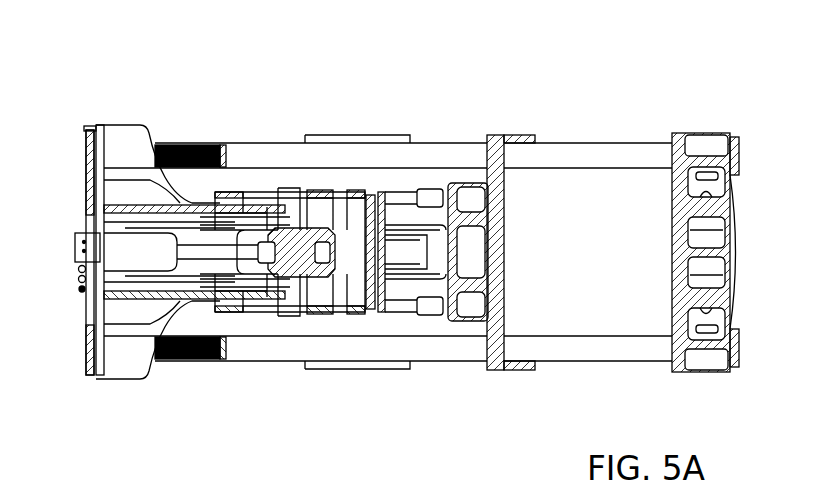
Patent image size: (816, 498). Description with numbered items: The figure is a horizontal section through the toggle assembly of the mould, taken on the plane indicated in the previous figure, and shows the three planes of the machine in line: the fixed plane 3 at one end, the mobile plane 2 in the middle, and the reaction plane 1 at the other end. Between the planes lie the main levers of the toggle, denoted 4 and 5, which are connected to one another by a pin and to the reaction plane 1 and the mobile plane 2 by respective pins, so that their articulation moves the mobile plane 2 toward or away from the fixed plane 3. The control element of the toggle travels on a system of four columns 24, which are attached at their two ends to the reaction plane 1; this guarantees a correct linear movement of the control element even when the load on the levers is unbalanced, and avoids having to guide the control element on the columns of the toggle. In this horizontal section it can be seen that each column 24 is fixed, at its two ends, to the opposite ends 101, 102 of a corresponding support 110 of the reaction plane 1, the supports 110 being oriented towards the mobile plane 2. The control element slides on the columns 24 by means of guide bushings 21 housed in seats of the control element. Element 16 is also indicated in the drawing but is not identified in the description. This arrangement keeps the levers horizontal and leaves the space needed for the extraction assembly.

The reaction plane 1 is at (90, 312).
The mobile plane 2 is at (494, 180).
The fixed plane 3 is at (677, 195).
The main lever of the toggle 4 is at (255, 315).
The main lever of the toggle 5 is at (327, 310).
The housing tube 16 is at (594, 156).
The guide bushing 21 is at (250, 208).
The column 24 is at (168, 140).
The end of support 101 is at (89, 134).
The end of support 102 is at (290, 192).
The support of the reaction plane 110 is at (227, 195).